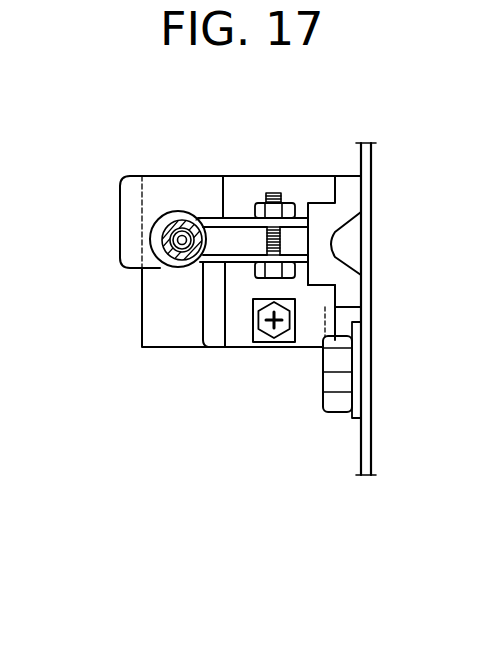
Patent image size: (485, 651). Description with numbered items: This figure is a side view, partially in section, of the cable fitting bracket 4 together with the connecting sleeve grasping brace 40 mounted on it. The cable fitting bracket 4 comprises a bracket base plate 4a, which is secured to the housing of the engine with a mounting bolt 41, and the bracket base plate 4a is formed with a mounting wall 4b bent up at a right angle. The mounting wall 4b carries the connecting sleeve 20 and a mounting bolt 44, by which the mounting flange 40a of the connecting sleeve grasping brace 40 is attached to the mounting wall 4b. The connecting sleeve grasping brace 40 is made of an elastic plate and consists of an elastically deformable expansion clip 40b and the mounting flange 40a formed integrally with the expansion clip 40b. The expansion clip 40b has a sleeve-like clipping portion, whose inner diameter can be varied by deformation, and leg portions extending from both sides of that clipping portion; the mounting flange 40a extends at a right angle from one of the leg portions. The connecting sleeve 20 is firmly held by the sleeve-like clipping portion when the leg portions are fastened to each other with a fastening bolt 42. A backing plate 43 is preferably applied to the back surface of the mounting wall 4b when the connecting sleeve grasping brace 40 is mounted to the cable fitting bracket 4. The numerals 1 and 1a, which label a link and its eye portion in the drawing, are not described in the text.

The link 1 is at (163, 212).
The eye portion of link 1a is at (188, 210).
The cable fitting bracket 4 is at (356, 437).
The bracket base plate 4a is at (366, 232).
The mounting wall 4b is at (120, 233).
The connecting sleeve 20 is at (160, 265).
The connecting sleeve grasping brace 40 is at (244, 212).
The mounting flange 40a is at (300, 197).
The expansion clip 40b is at (205, 268).
The mounting bolt 41 is at (323, 377).
The fastening bolt 42 is at (270, 192).
The backing plate 43 is at (142, 319).
The mounting bolt 44 is at (276, 347).